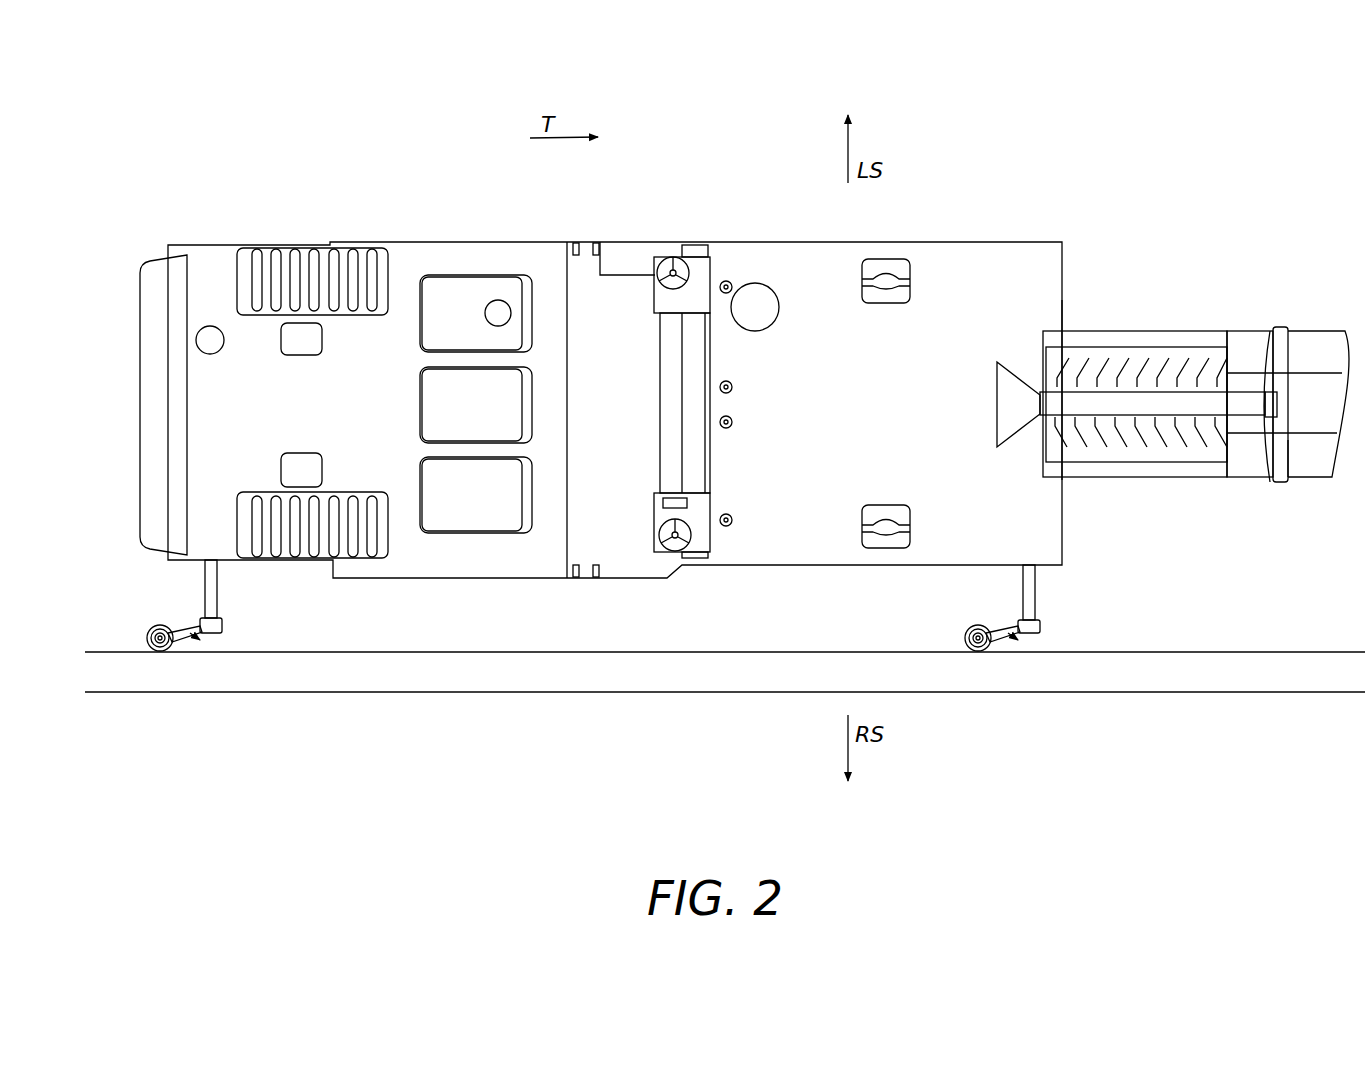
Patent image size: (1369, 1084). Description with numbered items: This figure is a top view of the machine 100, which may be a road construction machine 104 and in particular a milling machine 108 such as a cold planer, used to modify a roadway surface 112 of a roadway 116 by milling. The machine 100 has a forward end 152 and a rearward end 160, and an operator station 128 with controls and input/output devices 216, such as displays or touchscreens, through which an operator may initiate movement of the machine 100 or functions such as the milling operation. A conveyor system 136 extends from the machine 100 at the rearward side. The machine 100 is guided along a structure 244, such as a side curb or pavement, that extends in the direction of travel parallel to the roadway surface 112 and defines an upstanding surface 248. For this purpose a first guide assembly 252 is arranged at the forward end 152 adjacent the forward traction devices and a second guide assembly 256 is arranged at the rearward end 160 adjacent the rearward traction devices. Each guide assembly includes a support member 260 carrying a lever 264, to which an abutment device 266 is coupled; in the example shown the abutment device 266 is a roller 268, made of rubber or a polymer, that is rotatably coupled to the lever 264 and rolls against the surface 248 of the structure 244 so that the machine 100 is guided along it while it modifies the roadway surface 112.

The machine 100 is at (170, 180).
The road construction machine 104 is at (195, 140).
The milling machine 108 is at (1108, 160).
The roadway surface 112 is at (1144, 543).
The roadway 116 is at (1331, 575).
The operator station 128 is at (622, 313).
The conveyor system 136 is at (1246, 327).
The forward end 152 is at (1077, 262).
The rearward end 160 is at (120, 402).
The input/output devices 216 is at (660, 503).
The structure 244 is at (507, 678).
The surface 248 is at (743, 652).
The first guide assembly 252 is at (1041, 590).
The second guide assembly 256 is at (203, 590).
The support member 260 is at (1036, 572).
The lever 264 is at (998, 626).
The abutment device 266 is at (966, 637).
The roller 268 is at (975, 628).